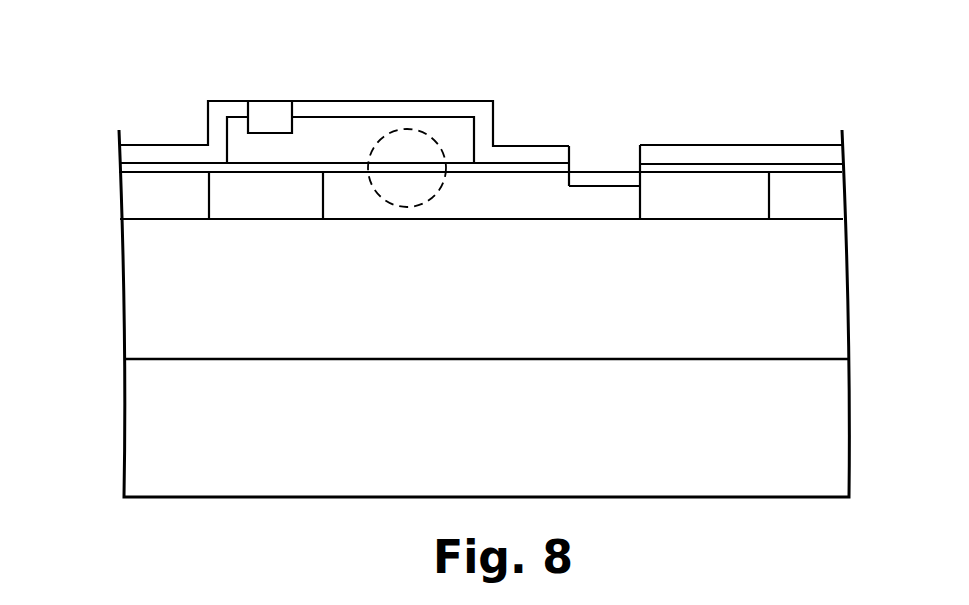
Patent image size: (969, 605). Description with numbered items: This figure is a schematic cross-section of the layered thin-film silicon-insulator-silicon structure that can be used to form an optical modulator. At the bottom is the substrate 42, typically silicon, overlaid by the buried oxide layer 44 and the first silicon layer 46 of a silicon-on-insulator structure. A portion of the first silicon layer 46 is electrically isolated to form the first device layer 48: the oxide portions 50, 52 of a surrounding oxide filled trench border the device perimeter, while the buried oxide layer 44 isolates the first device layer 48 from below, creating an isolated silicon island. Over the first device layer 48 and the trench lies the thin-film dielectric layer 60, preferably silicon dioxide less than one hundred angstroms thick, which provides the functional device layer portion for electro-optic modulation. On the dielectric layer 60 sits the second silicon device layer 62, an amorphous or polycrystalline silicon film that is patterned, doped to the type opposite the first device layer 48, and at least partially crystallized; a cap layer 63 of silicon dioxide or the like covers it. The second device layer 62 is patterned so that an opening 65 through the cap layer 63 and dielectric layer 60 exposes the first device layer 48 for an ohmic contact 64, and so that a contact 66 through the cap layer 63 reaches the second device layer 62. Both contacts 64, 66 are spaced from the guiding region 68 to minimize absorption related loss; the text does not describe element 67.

The substrate 42 is at (790, 428).
The buried oxide layer 44 is at (817, 283).
The first silicon layer 46 is at (138, 198).
The first device layer 48 is at (527, 205).
The oxide portion 50 is at (265, 200).
The oxide portion 52 is at (695, 198).
The thin-film dielectric layer 60 is at (132, 168).
The second silicon device layer 62 is at (315, 148).
The cap layer 63 is at (159, 158).
The contact 64 is at (598, 178).
The opening 65 is at (580, 145).
The contact 66 is at (268, 125).
The groove cover portion 67 is at (258, 103).
The guiding region 68 is at (418, 130).